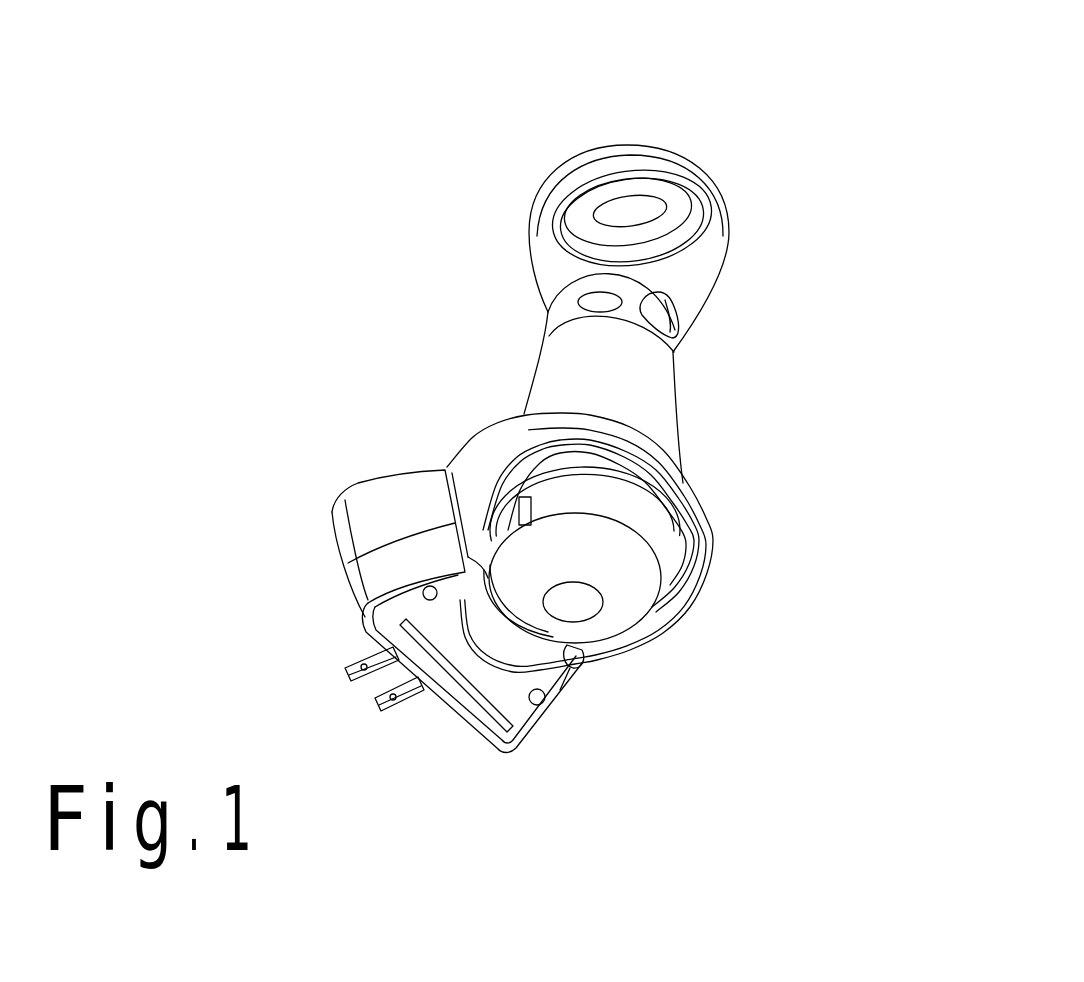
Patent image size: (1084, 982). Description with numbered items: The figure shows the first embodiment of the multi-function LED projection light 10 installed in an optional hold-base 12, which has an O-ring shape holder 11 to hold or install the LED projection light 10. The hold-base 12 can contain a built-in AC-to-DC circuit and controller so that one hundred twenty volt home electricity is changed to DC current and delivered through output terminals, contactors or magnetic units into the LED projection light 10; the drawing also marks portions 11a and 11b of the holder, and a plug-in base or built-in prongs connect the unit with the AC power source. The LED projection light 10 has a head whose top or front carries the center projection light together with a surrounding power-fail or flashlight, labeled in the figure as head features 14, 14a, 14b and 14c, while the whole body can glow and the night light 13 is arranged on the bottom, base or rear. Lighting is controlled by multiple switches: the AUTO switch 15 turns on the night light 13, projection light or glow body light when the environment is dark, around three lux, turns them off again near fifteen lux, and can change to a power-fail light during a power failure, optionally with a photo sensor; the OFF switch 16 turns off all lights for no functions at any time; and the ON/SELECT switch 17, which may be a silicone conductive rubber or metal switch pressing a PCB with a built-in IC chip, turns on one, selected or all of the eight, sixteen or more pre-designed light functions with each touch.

The LED projection light 10 is at (662, 413).
The O-ring shape holder 11 is at (453, 467).
The plate outer edge 11a is at (563, 713).
The plate inner edge 11b is at (513, 735).
The hold-base 12 is at (360, 708).
The night light 13 is at (626, 598).
The sensor head 14 is at (590, 149).
The lens ring 14a is at (550, 213).
The head top face 14b is at (580, 203).
The sensor lens 14c is at (630, 208).
The AUTO switch 15 is at (678, 306).
The OFF switch 16 is at (657, 292).
The ON/SELECT switch 17 is at (590, 302).